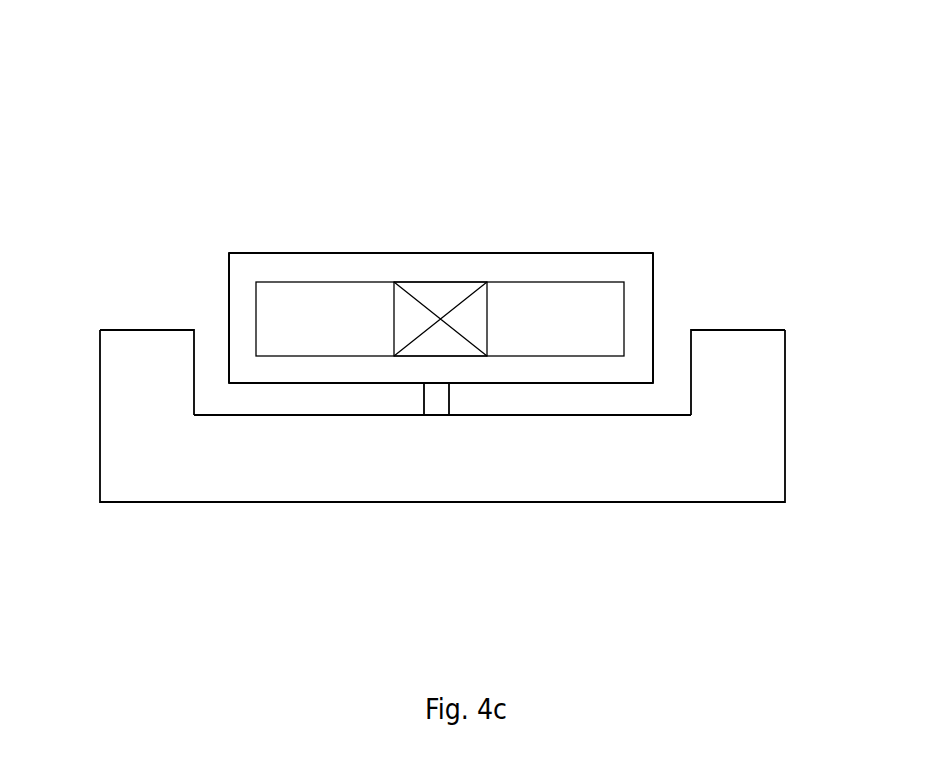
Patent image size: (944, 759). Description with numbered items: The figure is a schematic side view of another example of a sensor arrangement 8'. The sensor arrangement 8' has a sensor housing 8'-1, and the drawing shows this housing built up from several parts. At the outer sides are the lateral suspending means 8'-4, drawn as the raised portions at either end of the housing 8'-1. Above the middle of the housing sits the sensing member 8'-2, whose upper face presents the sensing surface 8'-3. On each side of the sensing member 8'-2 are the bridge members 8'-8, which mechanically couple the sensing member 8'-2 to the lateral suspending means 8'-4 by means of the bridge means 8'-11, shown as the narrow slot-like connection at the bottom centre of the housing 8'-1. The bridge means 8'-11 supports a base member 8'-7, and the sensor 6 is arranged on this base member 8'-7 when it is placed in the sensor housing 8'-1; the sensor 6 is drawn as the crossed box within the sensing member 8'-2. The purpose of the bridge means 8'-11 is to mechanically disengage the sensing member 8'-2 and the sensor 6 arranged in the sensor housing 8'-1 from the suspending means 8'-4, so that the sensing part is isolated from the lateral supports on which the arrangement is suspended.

The sensor arrangement 8' is at (438, 335).
The sensor housing 8'-1 is at (427, 482).
The sensing member 8'-2 is at (441, 266).
The sensing surface 8'-3 is at (441, 196).
The lateral suspending means 8'-4 is at (438, 363).
The base member 8'-7 is at (440, 424).
The bridge members 8'-8 is at (430, 288).
The bridge means 8'-11 is at (428, 492).
The sensor 6 is at (472, 320).